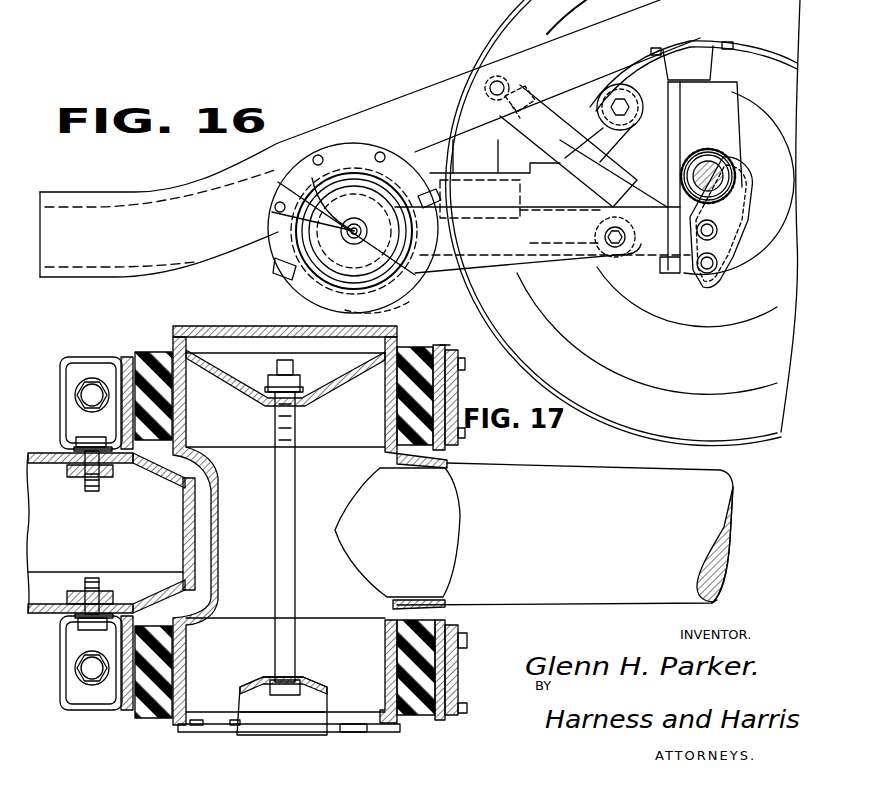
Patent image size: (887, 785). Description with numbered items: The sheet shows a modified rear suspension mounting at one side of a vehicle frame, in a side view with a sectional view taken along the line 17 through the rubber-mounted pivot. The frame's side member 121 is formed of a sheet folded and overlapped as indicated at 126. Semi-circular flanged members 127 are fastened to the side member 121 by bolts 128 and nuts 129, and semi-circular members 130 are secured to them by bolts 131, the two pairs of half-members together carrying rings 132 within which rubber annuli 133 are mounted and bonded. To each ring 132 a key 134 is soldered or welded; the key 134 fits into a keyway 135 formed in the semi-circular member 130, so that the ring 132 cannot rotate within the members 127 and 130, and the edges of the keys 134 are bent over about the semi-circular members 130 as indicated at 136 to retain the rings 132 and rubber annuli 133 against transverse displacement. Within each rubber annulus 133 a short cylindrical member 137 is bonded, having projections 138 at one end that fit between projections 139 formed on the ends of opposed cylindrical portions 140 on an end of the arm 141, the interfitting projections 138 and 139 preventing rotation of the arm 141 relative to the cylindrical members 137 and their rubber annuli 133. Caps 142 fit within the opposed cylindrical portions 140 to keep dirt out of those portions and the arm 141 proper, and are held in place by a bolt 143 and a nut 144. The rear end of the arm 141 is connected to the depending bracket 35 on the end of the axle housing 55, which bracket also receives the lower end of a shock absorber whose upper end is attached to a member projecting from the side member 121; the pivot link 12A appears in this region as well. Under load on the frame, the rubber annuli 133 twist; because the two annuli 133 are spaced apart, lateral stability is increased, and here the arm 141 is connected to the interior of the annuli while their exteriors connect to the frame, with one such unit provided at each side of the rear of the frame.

In FIG. 16, the side member 121 is at (114, 192).
In FIG. 17, the side member 121 is at (111, 533).
In FIG. 16, the pivot link 12A is at (616, 142).
In FIG. 16, the axle housing 55 is at (707, 150).
In FIG. 16, the depending bracket 35 is at (746, 181).
In FIG. 16, the bolts 131 is at (250, 292).
In FIG. 17, the bolts 131 is at (92, 372).
In FIG. 16, the semi-circular members 130 is at (312, 290).
In FIG. 17, the semi-circular members 130 is at (458, 656).
In FIG. 16, the rings 132 is at (330, 294).
In FIG. 17, the rings 132 is at (124, 713).
In FIG. 16, the keyway 135 is at (380, 306).
In FIG. 17, the keyway 135 is at (446, 686).
In FIG. 16, the semi-circular flanged members 127 is at (276, 242).
In FIG. 17, the semi-circular flanged members 127 is at (132, 468).
In FIG. 16, the bolt 143 is at (327, 223).
In FIG. 17, the bolt 143 is at (296, 488).
In FIG. 16, the section line 17- 17 is at (246, 238).
In FIG. 17, the folded and overlapped portion 126 is at (183, 530).
In FIG. 17, the caps 142 is at (232, 384).
In FIG. 17, the nut 144 is at (299, 375).
In FIG. 17, the opposed cylindrical portions 140 is at (355, 426).
In FIG. 17, the projections 139 is at (312, 732).
In FIG. 17, the short cylindrical member 137 is at (358, 731).
In FIG. 17, the projections 138 is at (400, 726).
In FIG. 17, the arm 141 is at (576, 478).
In FIG. 17, the rubber annuli 133 is at (150, 354).
In FIG. 17, the key 134 is at (456, 720).
In FIG. 17, the bent-over edges 136 is at (450, 346).
In FIG. 17, the bolts 128 is at (85, 490).
In FIG. 17, the nuts 129 is at (110, 479).